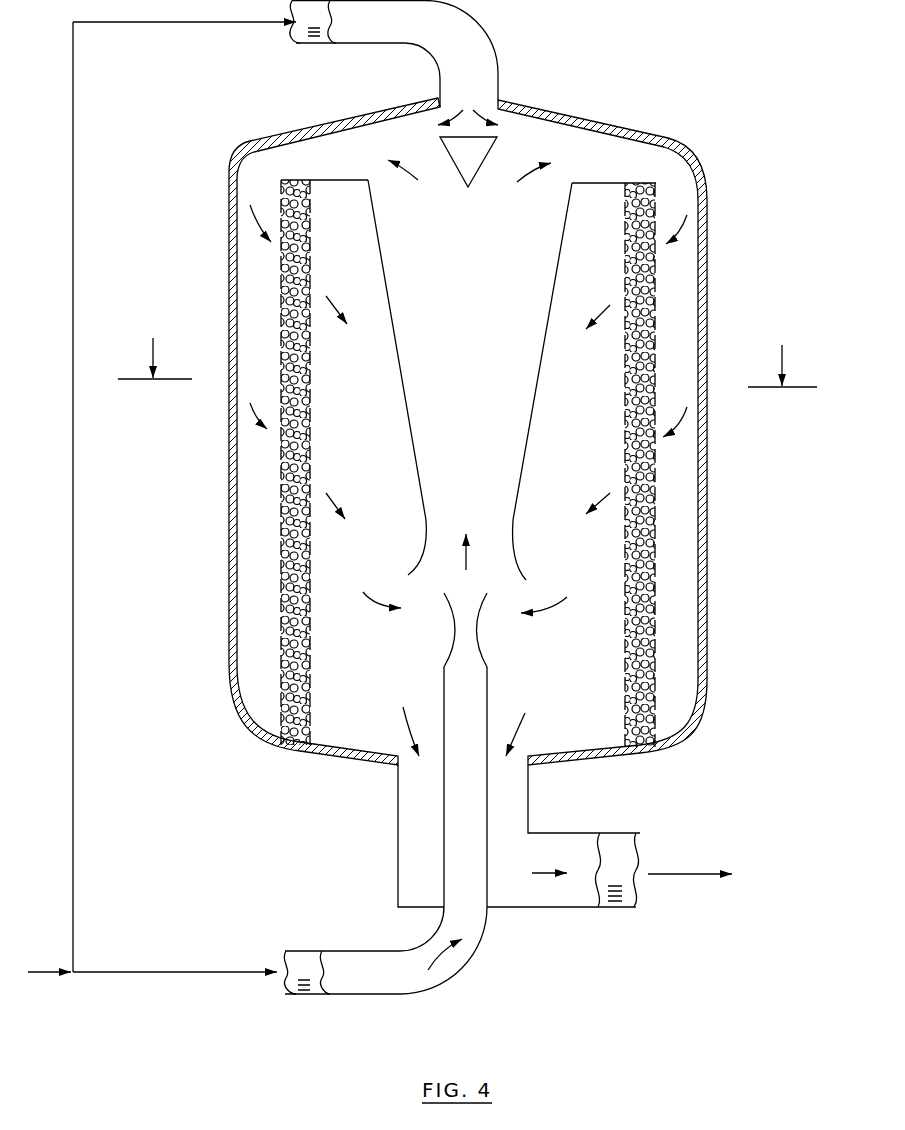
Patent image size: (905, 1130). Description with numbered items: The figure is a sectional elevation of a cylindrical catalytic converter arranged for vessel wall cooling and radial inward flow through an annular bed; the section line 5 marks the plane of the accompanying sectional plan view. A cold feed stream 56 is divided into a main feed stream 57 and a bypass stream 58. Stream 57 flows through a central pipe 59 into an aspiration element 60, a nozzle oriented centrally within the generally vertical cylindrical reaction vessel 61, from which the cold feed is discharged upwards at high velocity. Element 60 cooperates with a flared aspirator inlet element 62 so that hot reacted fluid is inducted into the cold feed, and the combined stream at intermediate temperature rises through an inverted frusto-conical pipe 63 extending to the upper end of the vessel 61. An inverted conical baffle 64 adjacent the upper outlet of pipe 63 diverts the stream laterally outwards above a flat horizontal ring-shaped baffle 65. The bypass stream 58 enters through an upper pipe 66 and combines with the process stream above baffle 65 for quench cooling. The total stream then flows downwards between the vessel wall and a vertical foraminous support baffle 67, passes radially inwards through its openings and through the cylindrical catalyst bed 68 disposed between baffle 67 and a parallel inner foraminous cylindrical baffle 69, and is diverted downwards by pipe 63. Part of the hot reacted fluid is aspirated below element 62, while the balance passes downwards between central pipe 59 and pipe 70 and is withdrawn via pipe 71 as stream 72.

The section line 5- 5 is at (467, 362).
The cold feed stream 56 is at (49, 973).
The main feed stream 57 is at (112, 974).
The bypass stream 58 is at (73, 920).
The central pipe 59 is at (466, 975).
The aspiration element 60 is at (453, 622).
The cylindrical reaction vessel 61 is at (228, 266).
The flared aspirator inlet element 62 is at (425, 555).
The inverted frusto-conical pipe 63 is at (412, 431).
The inverted conical baffle 64 is at (489, 156).
The flat horizontal ring-shaped baffle 65 is at (326, 180).
The upper pipe 66 is at (318, 44).
The foraminous support baffle 67 is at (280, 633).
The catalyst bed 68 is at (308, 406).
The inner foraminous cylindrical baffle 69 is at (310, 680).
The pipe 70 is at (398, 844).
The pipe 71 is at (543, 908).
The stream 72 is at (680, 858).